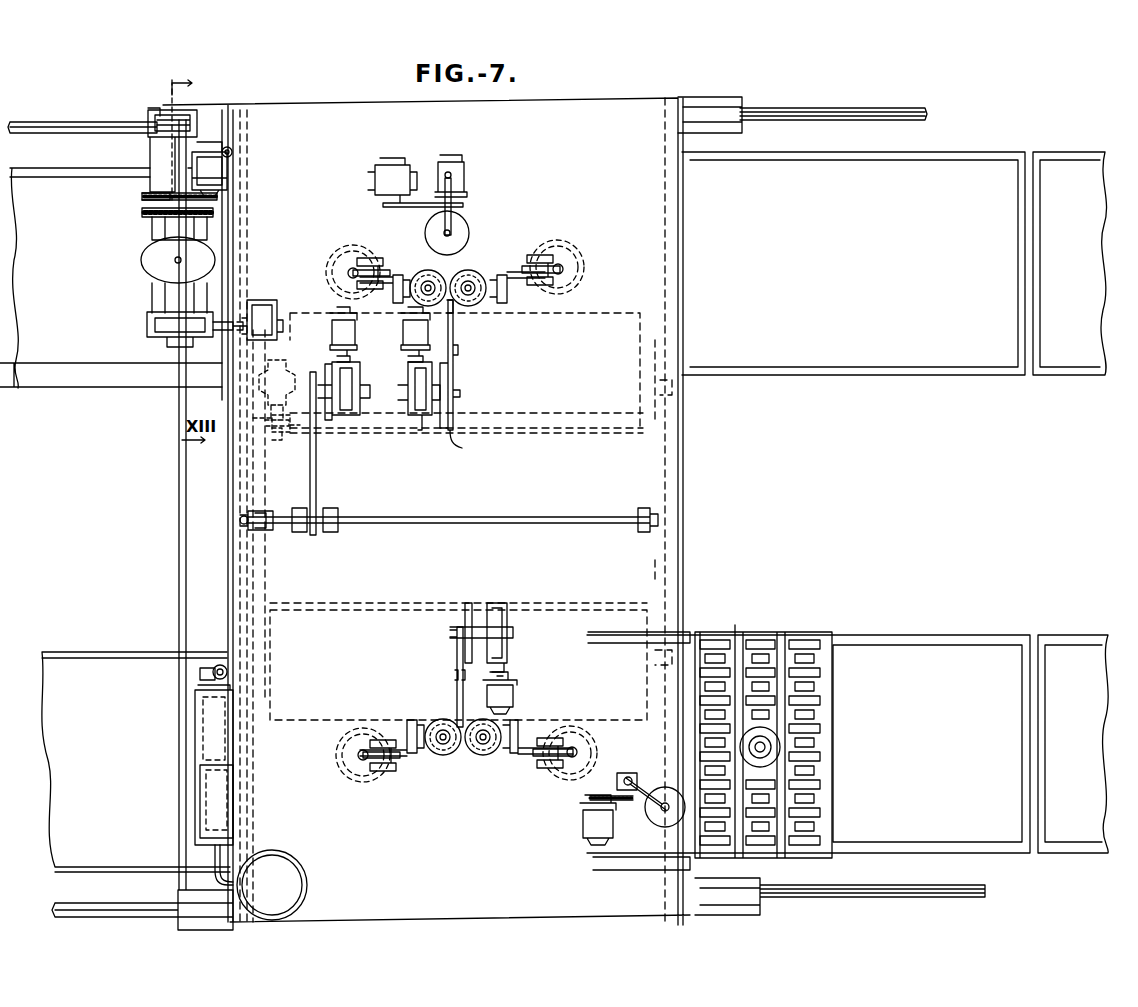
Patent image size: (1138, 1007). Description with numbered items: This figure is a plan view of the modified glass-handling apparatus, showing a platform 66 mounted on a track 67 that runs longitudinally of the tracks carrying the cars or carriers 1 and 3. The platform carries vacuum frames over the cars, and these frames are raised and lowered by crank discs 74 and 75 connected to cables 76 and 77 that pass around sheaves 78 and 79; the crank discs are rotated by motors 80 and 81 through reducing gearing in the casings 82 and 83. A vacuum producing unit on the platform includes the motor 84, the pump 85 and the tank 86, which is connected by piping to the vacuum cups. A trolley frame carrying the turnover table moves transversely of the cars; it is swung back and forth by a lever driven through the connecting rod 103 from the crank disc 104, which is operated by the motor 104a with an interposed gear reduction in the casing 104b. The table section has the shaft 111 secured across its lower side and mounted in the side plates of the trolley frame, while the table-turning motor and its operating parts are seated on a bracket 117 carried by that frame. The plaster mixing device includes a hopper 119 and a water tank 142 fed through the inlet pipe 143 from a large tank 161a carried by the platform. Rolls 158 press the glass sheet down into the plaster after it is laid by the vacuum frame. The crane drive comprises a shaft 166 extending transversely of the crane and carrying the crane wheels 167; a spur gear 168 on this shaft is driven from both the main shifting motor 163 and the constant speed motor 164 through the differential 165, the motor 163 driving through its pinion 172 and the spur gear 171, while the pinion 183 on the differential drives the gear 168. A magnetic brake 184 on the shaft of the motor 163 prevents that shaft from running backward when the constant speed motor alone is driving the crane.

The car 1 is at (134, 655).
The car 3 is at (935, 373).
The platform 66 is at (312, 112).
The track 67 is at (50, 122).
The crank disc 74 is at (460, 448).
The crank disc 75 is at (466, 603).
The cable 76 is at (487, 268).
The cable 77 is at (425, 757).
The sheave 78 is at (395, 760).
The sheave 79 is at (448, 757).
The motor 80 is at (515, 695).
The motor 81 is at (402, 340).
The casing 82 is at (505, 605).
The casing 83 is at (422, 422).
The motor 84 is at (375, 183).
The pump 85 is at (466, 172).
The tank 86 is at (470, 226).
The connecting rod 103 is at (310, 480).
The crank disc 104 is at (320, 418).
The motor 104a is at (333, 312).
The casing 104b is at (352, 416).
The shaft 111 is at (285, 355).
The bracket 117 is at (280, 425).
The hopper 119 is at (202, 744).
The tank 142 is at (210, 797).
The inlet pipe 143 is at (212, 855).
The rolls 158 is at (808, 640).
The large tank 161a is at (292, 873).
The main shifting motor 163 is at (225, 172).
The motor 164 is at (260, 302).
The differential 165 is at (152, 268).
The shaft 166 is at (179, 522).
The crane wheels 167 is at (165, 110).
The spur gear 168 is at (142, 214).
The spur gear 171 is at (142, 197).
The pinion 172 is at (219, 197).
The pinion 183 is at (160, 228).
The magnetic brake 184 is at (230, 150).